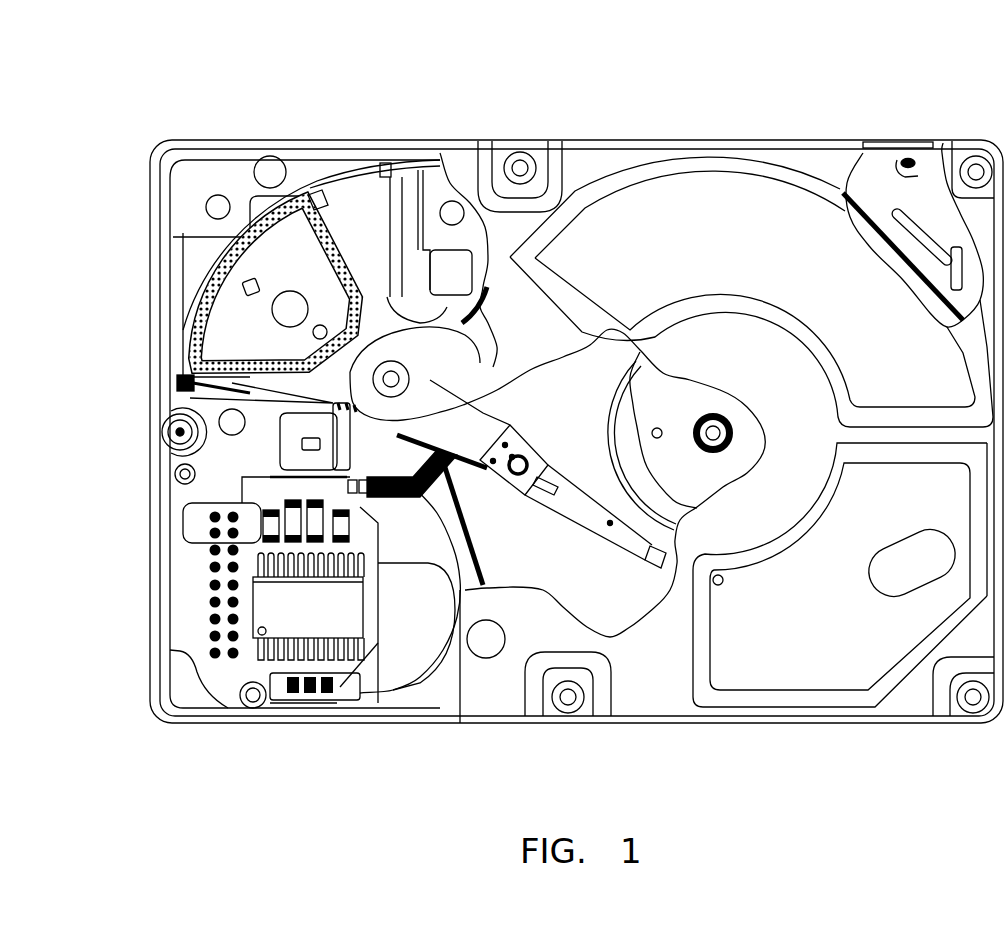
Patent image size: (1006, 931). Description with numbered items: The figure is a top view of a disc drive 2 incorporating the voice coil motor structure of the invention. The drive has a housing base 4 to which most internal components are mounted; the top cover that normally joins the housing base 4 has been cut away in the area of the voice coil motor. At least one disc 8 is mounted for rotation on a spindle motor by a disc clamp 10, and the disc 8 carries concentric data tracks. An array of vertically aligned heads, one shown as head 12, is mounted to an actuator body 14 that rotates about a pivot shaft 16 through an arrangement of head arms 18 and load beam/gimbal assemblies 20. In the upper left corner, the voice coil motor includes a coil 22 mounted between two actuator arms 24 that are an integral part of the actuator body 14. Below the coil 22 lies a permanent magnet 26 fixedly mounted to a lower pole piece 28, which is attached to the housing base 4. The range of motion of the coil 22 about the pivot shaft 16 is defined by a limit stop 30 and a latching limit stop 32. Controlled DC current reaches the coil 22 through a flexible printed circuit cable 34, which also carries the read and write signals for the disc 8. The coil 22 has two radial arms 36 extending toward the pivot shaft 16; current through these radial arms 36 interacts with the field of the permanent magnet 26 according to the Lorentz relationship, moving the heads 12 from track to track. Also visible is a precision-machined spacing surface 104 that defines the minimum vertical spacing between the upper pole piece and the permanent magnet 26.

The disc drive 2 is at (565, 98).
The housing base 4 is at (293, 730).
The disc 8 is at (547, 588).
The disc clamp 10 is at (716, 468).
The head 12 is at (655, 562).
The actuator body 14 is at (483, 358).
The pivot shaft 16 is at (412, 386).
The head arm 18 is at (472, 448).
The load beam/gimbal assembly 20 is at (580, 503).
The coil 22 is at (212, 265).
The actuator arm 24 is at (175, 477).
The permanent magnet 26 is at (402, 212).
The lower pole piece 28 is at (424, 187).
The limit stop 30 is at (387, 176).
The latching limit stop 32 is at (183, 373).
The flexible printed circuit cable 34 is at (411, 678).
The radial arm 36 is at (165, 408).
The spacing surface 104 is at (268, 165).